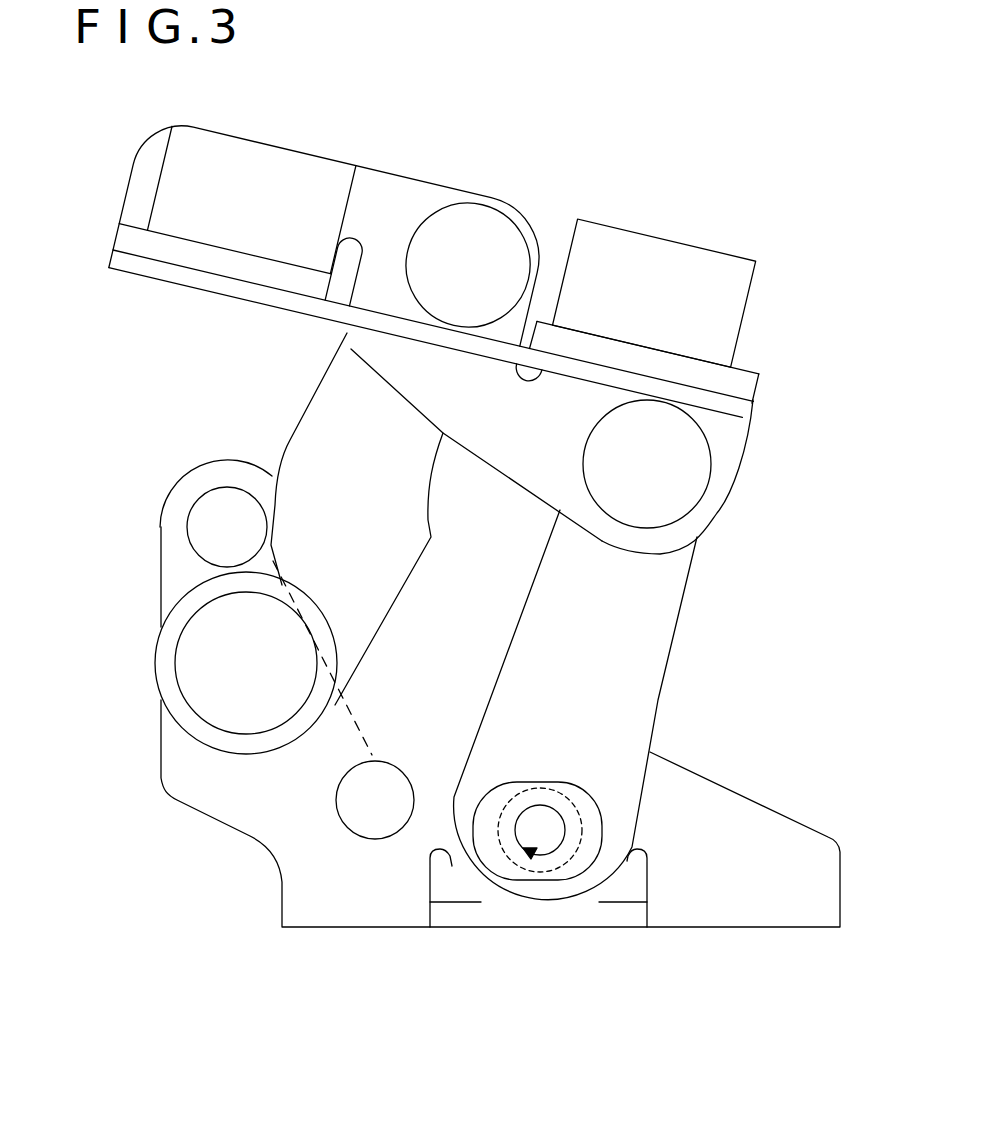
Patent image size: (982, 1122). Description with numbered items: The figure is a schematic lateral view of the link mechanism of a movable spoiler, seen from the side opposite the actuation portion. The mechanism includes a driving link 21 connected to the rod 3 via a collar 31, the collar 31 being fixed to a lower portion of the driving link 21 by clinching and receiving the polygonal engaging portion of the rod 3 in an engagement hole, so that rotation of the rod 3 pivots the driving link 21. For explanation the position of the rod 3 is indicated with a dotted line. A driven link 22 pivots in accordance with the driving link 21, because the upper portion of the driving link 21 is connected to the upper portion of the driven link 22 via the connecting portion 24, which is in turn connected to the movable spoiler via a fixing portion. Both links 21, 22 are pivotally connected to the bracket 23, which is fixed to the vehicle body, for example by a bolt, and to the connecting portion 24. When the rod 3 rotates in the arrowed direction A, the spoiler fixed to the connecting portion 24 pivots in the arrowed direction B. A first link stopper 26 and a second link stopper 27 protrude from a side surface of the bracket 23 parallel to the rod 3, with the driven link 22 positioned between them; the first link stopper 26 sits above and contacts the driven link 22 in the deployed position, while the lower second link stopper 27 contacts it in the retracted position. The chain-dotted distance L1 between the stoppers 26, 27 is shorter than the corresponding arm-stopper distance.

The rod 3 is at (540, 856).
The driving link 21 is at (670, 647).
The driven link 22 is at (288, 440).
The bracket 23 is at (163, 785).
The connecting portion 24 is at (113, 267).
The first link stopper 26 is at (163, 530).
The second link stopper 27 is at (373, 840).
The collar 31 is at (602, 822).
The arrowed direction A is at (547, 782).
The arrowed direction B is at (775, 576).
The distance L1 is at (362, 730).